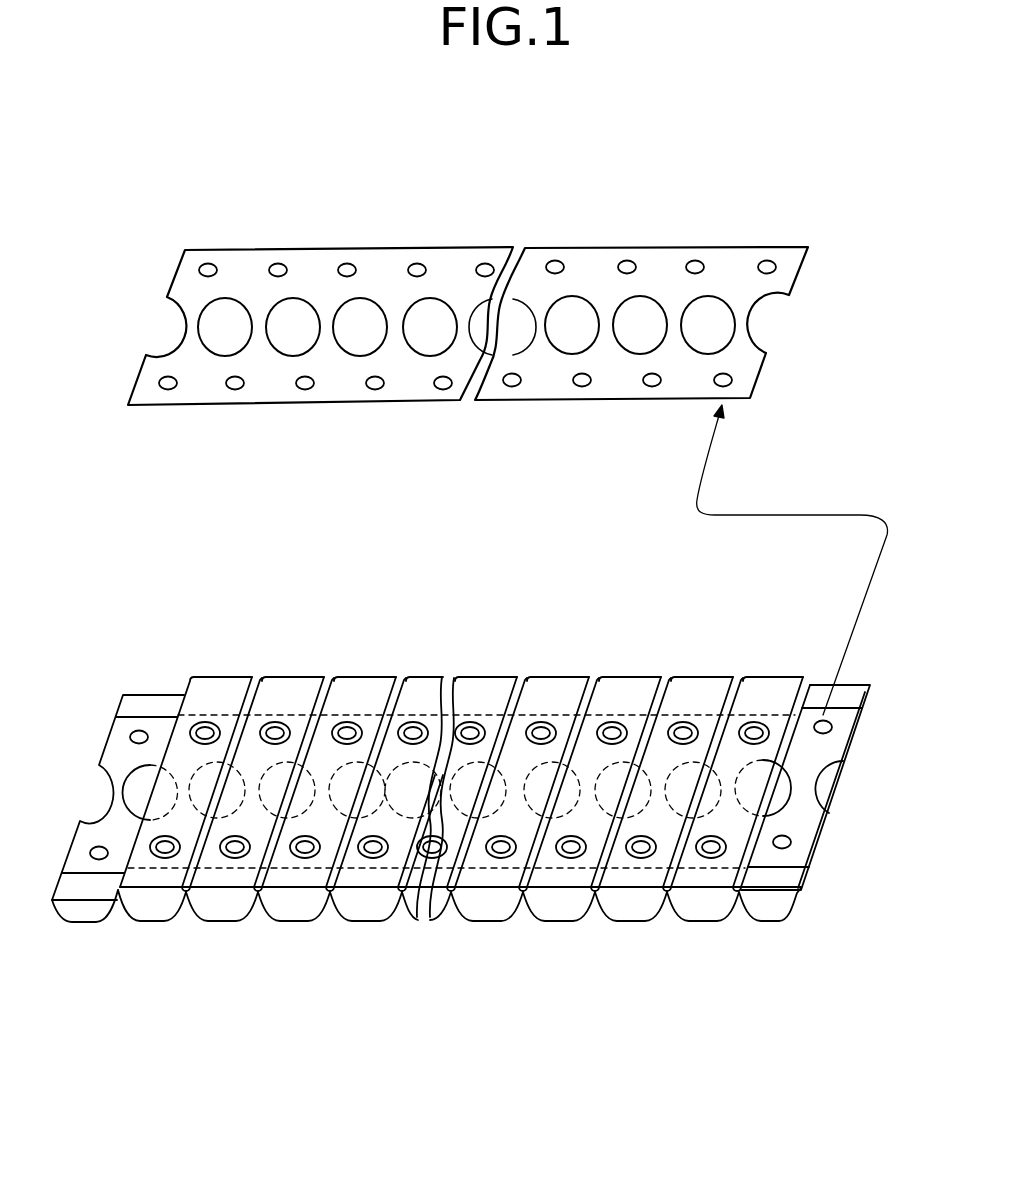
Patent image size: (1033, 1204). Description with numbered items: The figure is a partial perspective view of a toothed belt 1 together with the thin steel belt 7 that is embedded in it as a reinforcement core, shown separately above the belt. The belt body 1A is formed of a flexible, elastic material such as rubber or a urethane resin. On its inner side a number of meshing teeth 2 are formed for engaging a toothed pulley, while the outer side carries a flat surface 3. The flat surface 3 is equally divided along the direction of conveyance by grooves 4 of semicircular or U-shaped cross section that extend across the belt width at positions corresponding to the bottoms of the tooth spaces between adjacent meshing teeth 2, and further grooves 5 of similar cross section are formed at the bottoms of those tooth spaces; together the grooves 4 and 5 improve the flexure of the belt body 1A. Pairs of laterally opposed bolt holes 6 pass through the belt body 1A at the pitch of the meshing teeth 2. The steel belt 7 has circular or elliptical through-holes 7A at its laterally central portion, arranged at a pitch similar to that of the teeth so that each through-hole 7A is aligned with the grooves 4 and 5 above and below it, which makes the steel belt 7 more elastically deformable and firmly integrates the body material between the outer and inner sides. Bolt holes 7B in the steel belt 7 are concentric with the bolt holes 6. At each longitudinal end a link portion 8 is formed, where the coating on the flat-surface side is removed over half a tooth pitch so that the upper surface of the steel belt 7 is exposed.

The toothed belt 1 is at (138, 943).
The belt body 1A is at (485, 915).
The meshing teeth 2 is at (225, 923).
The flat surface 3 is at (362, 688).
The grooves 4 is at (670, 702).
The grooves 5 is at (593, 900).
The bolt holes 6 is at (538, 730).
The steel belt 7 is at (598, 270).
The through-holes 7A is at (723, 317).
The bolt holes 7B is at (695, 260).
The link portion 8 is at (155, 683).